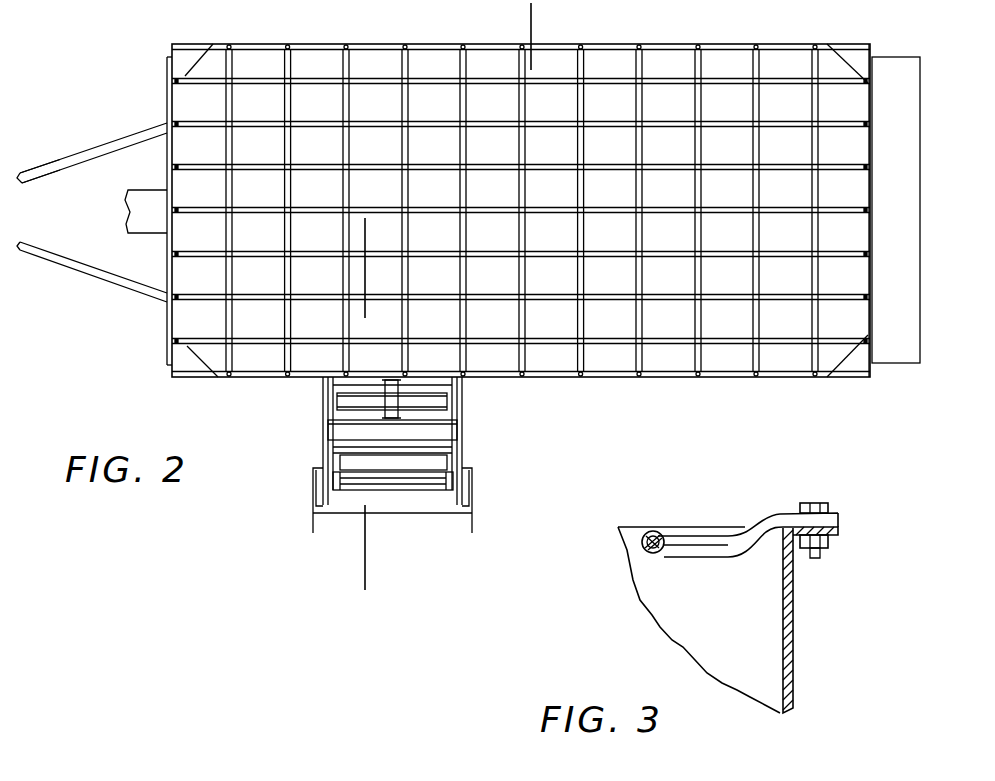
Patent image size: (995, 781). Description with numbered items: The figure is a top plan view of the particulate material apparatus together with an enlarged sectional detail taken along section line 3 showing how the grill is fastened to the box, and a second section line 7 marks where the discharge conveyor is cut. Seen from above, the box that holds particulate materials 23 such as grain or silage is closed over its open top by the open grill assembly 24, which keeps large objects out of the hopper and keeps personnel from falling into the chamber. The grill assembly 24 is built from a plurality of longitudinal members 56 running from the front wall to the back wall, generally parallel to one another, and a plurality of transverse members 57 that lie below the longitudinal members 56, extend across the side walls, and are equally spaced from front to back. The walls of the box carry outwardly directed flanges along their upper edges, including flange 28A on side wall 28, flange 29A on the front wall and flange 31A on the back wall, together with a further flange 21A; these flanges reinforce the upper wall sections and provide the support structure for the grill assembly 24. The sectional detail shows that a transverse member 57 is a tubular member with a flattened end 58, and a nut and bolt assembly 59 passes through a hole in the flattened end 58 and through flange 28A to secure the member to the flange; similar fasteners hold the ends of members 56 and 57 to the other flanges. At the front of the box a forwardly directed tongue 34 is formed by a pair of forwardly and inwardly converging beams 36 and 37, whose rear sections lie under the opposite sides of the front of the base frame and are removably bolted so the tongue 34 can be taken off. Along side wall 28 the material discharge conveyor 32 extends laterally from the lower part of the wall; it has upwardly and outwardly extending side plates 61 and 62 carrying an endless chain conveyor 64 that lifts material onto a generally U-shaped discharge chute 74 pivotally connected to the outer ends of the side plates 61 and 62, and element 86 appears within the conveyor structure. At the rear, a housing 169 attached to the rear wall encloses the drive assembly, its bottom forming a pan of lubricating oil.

In FIG. 2, the section line 3— 3 is at (534, 22).
In FIG. 2, the section line 7— 7 is at (362, 232).
In FIG. 2, the top frame rail 21A is at (790, 48).
In FIG. 2, the particulate materials 23 is at (253, 378).
In FIG. 2, the open grill assembly 24 is at (678, 303).
In FIG. 3, the open grill assembly 24 is at (693, 527).
In FIG. 3, the side wall 28 is at (795, 628).
In FIG. 2, the flange 28A is at (783, 374).
In FIG. 3, the flange 28A is at (840, 537).
In FIG. 2, the flange 29A is at (176, 183).
In FIG. 2, the flange 31A is at (868, 103).
In FIG. 2, the material discharge conveyor 32 is at (305, 514).
In FIG. 2, the tongue 34 is at (52, 152).
In FIG. 2, the beam 36 is at (117, 143).
In FIG. 2, the beam 37 is at (125, 283).
In FIG. 2, the longitudinal members 56 is at (660, 80).
In FIG. 2, the transverse members 57 is at (752, 68).
In FIG. 3, the transverse members 57 is at (667, 532).
In FIG. 3, the flattened end 58 is at (838, 512).
In FIG. 3, the nut and bolt assembly 59 is at (808, 502).
In FIG. 2, the side plate 61 is at (323, 450).
In FIG. 2, the side plate 62 is at (463, 452).
In FIG. 2, the endless chain conveyor 64 is at (400, 481).
In FIG. 2, the discharge chute 74 is at (438, 508).
In FIG. 2, the post 86 is at (400, 400).
In FIG. 2, the housing 169 is at (893, 352).